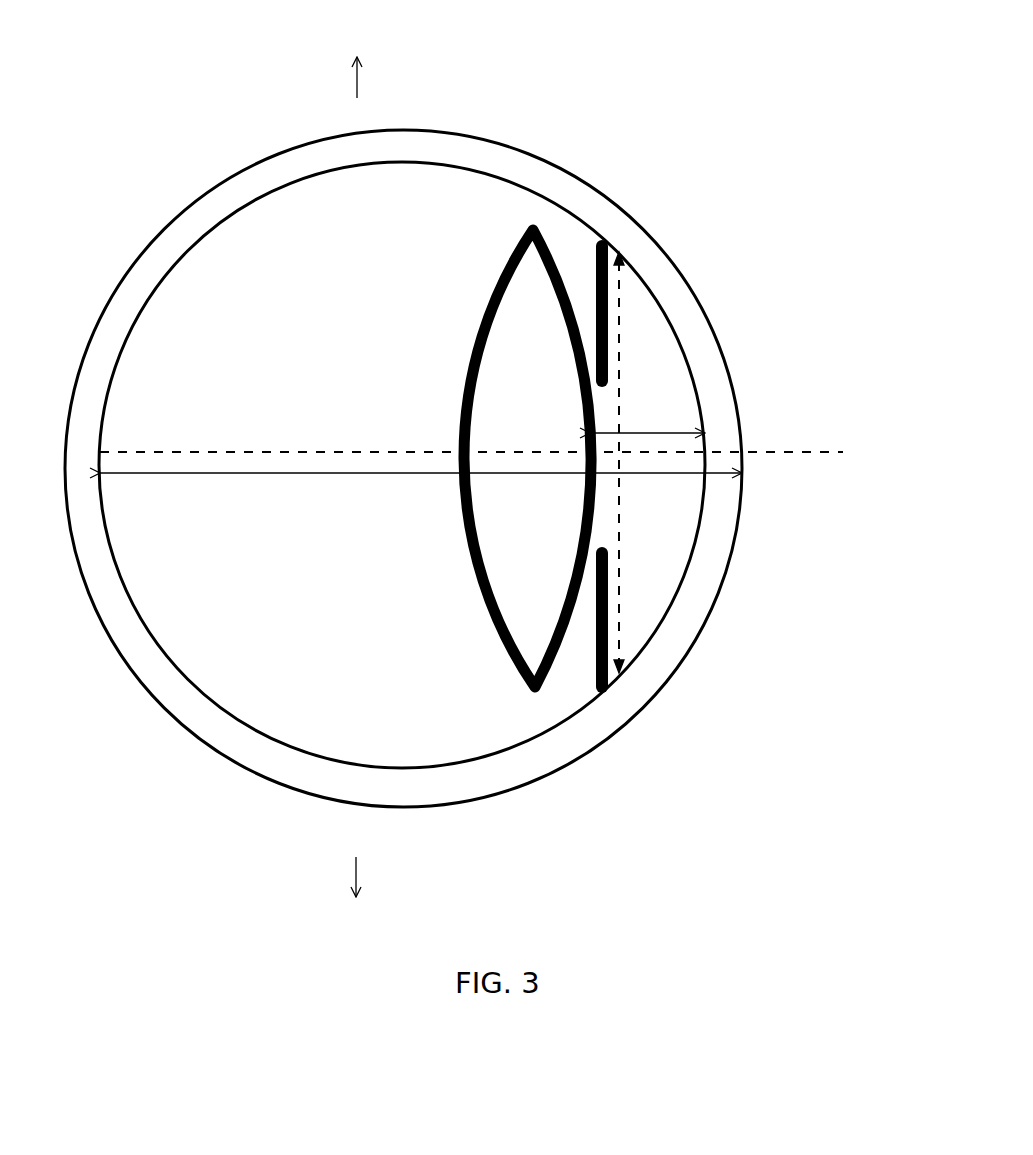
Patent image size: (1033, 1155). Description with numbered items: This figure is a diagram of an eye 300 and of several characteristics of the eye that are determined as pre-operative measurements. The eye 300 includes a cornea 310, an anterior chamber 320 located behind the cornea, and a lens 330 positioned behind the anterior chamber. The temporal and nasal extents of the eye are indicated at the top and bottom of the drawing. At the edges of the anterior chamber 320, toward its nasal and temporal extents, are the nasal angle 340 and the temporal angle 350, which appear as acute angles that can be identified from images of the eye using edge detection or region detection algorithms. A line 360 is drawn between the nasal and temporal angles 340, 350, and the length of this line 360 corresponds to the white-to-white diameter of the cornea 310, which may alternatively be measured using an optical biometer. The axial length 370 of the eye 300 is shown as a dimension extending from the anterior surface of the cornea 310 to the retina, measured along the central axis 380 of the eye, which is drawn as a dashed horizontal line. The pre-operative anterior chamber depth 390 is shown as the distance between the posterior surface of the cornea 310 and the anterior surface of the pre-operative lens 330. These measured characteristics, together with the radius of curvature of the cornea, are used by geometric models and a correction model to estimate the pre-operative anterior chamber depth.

The eye 300 is at (108, 73).
The cornea 310 is at (725, 432).
The anterior chamber 320 is at (675, 383).
The lens 330 is at (547, 250).
The nasal angle 340 is at (615, 682).
The temporal angle 350 is at (615, 252).
The line 360 is at (618, 592).
The axial length 370 is at (421, 473).
The central axis 380 is at (805, 453).
The pre-operative anterior chamber depth (ACD) 390 is at (647, 433).